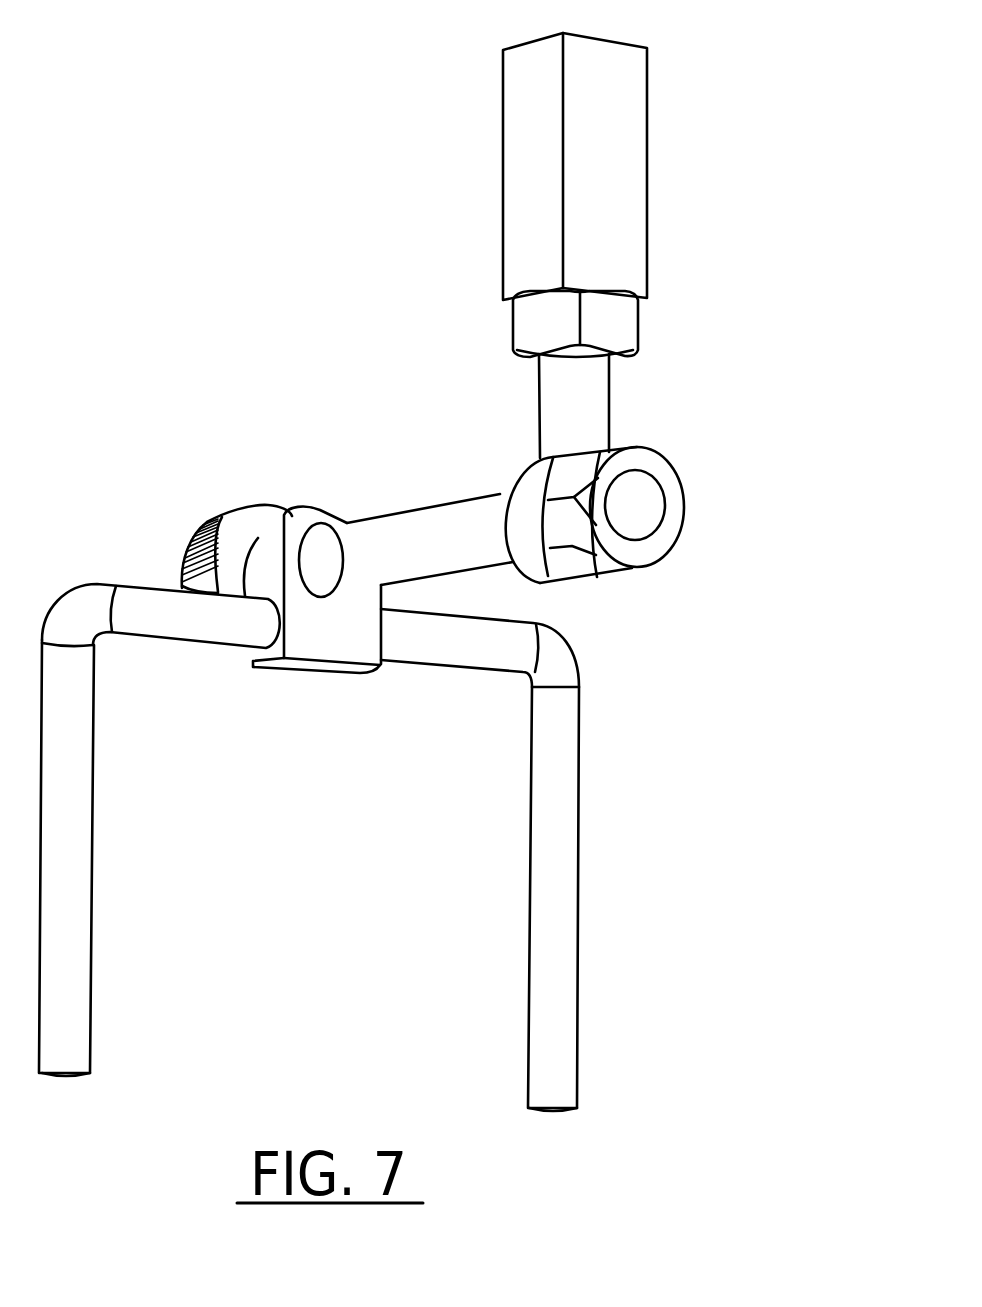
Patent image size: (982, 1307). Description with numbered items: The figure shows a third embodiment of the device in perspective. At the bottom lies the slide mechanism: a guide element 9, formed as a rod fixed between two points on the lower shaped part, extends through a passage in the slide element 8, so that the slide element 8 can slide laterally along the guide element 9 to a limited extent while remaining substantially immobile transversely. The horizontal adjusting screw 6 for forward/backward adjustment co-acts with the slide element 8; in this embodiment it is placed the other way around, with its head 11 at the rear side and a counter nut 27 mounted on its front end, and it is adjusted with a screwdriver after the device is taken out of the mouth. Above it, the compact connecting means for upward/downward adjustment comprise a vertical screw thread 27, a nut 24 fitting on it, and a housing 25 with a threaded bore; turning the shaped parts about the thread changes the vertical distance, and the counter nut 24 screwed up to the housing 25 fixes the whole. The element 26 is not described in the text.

The horizontal adjusting screw 6 is at (400, 530).
The slide element 8 is at (312, 648).
The guide element 9 is at (428, 645).
The head 11 is at (202, 527).
The nut 24 is at (613, 322).
The housing 25 is at (628, 217).
The nut 26 is at (652, 543).
The counter nut 27 is at (585, 397).